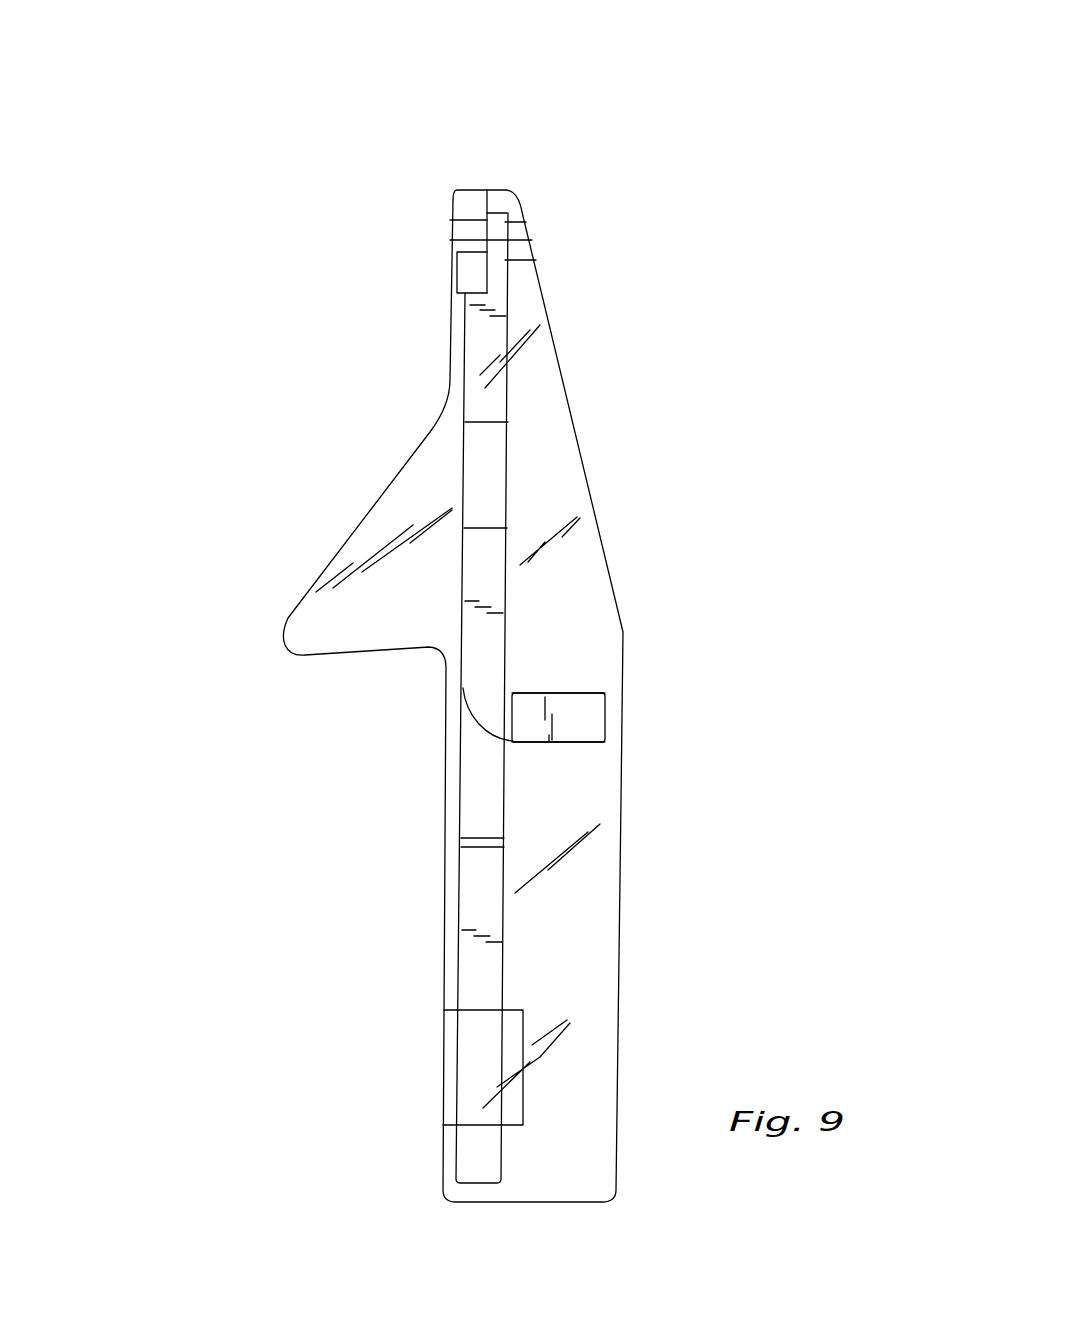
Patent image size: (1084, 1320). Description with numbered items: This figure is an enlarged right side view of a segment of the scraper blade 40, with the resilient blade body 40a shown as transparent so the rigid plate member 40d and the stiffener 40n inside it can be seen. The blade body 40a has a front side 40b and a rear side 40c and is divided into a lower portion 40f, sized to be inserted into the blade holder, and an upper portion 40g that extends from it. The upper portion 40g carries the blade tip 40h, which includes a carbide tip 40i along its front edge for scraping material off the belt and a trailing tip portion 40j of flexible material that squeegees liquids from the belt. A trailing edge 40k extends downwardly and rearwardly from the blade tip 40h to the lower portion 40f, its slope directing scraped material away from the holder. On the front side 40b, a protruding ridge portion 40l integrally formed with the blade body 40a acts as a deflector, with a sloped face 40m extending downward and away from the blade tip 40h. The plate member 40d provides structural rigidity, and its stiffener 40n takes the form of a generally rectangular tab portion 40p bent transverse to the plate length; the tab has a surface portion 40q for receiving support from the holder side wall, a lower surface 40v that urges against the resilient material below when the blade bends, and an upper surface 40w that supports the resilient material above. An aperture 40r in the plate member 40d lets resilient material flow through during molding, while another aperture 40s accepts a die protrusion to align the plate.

The scraper blade 40 is at (258, 234).
The blade body 40a is at (678, 878).
The front side 40b is at (230, 710).
The rear side 40c is at (797, 661).
The plate member 40d is at (470, 886).
The lower portion 40f is at (711, 967).
The upper portion 40g is at (705, 319).
The blade tip 40h is at (470, 124).
The carbide tip 40i is at (468, 195).
The trailing tip portion 40j is at (500, 188).
The trailing edge 40k is at (557, 360).
The protruding ridge portion 40l is at (333, 625).
The sloped face 40m is at (363, 513).
The stiffener 40n is at (563, 692).
The tab portion 40p is at (575, 731).
The surface portion 40q is at (607, 720).
The aperture 40r is at (490, 425).
The aperture 40s is at (478, 1120).
The lower surface 40v is at (535, 745).
The upper surface 40w is at (543, 692).